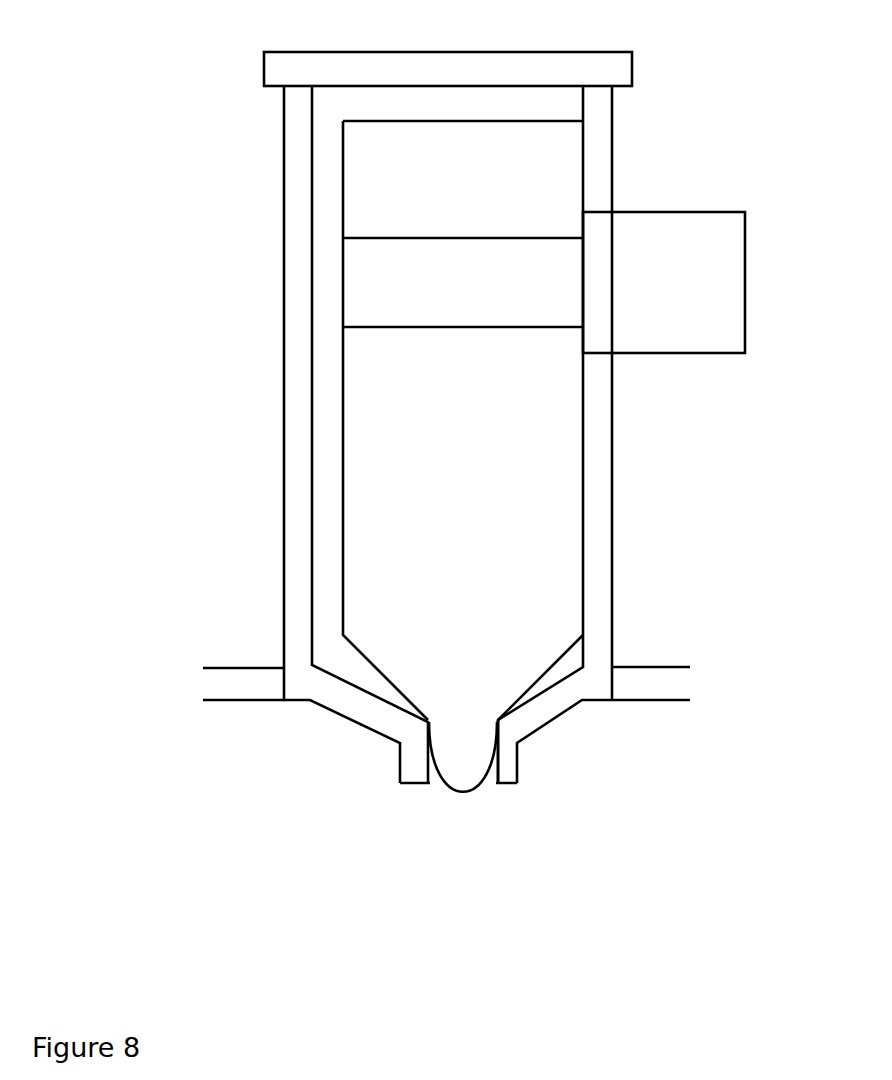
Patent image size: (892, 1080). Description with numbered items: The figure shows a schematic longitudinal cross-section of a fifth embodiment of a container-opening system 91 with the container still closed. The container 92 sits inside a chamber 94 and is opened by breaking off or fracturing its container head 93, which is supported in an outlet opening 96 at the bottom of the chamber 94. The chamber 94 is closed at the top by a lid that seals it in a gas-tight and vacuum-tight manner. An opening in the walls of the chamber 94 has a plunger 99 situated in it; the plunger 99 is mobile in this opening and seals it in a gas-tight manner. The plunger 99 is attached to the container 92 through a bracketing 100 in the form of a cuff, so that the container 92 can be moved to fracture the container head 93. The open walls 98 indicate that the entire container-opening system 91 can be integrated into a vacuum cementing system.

The container-opening system 91 is at (385, 63).
The container 92 is at (450, 184).
The container head 93 is at (455, 754).
The chamber 94 is at (303, 325).
The outlet opening 96 is at (440, 783).
The open walls 98 is at (243, 683).
The plunger 99 is at (685, 272).
The bracketing 100 is at (390, 265).